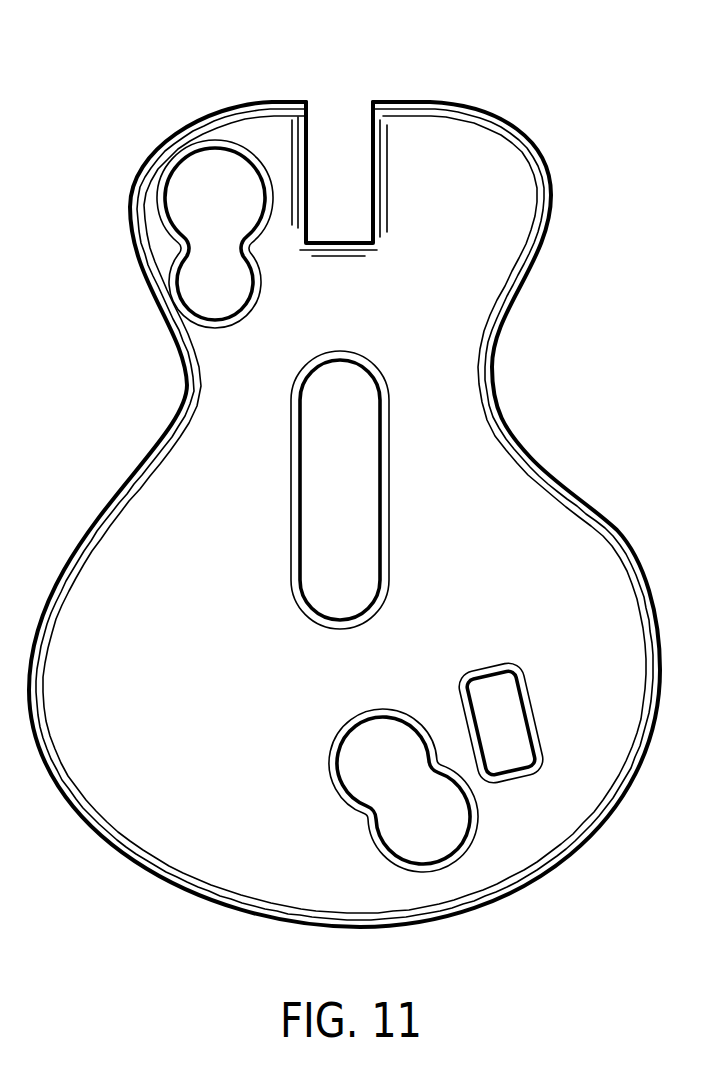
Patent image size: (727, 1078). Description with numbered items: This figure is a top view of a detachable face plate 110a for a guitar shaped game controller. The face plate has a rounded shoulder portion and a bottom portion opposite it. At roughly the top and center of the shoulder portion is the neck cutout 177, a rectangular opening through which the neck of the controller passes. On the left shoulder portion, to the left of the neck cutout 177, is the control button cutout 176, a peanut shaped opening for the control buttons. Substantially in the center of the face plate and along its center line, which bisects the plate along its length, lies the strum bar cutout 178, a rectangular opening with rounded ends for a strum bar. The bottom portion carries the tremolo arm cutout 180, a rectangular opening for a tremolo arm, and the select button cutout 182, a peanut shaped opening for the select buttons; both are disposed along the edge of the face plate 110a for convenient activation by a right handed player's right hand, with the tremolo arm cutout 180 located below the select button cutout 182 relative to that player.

The detachable face plate 110a is at (550, 197).
The neck cutout 177 is at (338, 115).
The control button cutout 176 is at (197, 315).
The strum bar cutout 178 is at (342, 358).
The tremolo arm cutout 180 is at (512, 672).
The select button cutout 182 is at (355, 727).